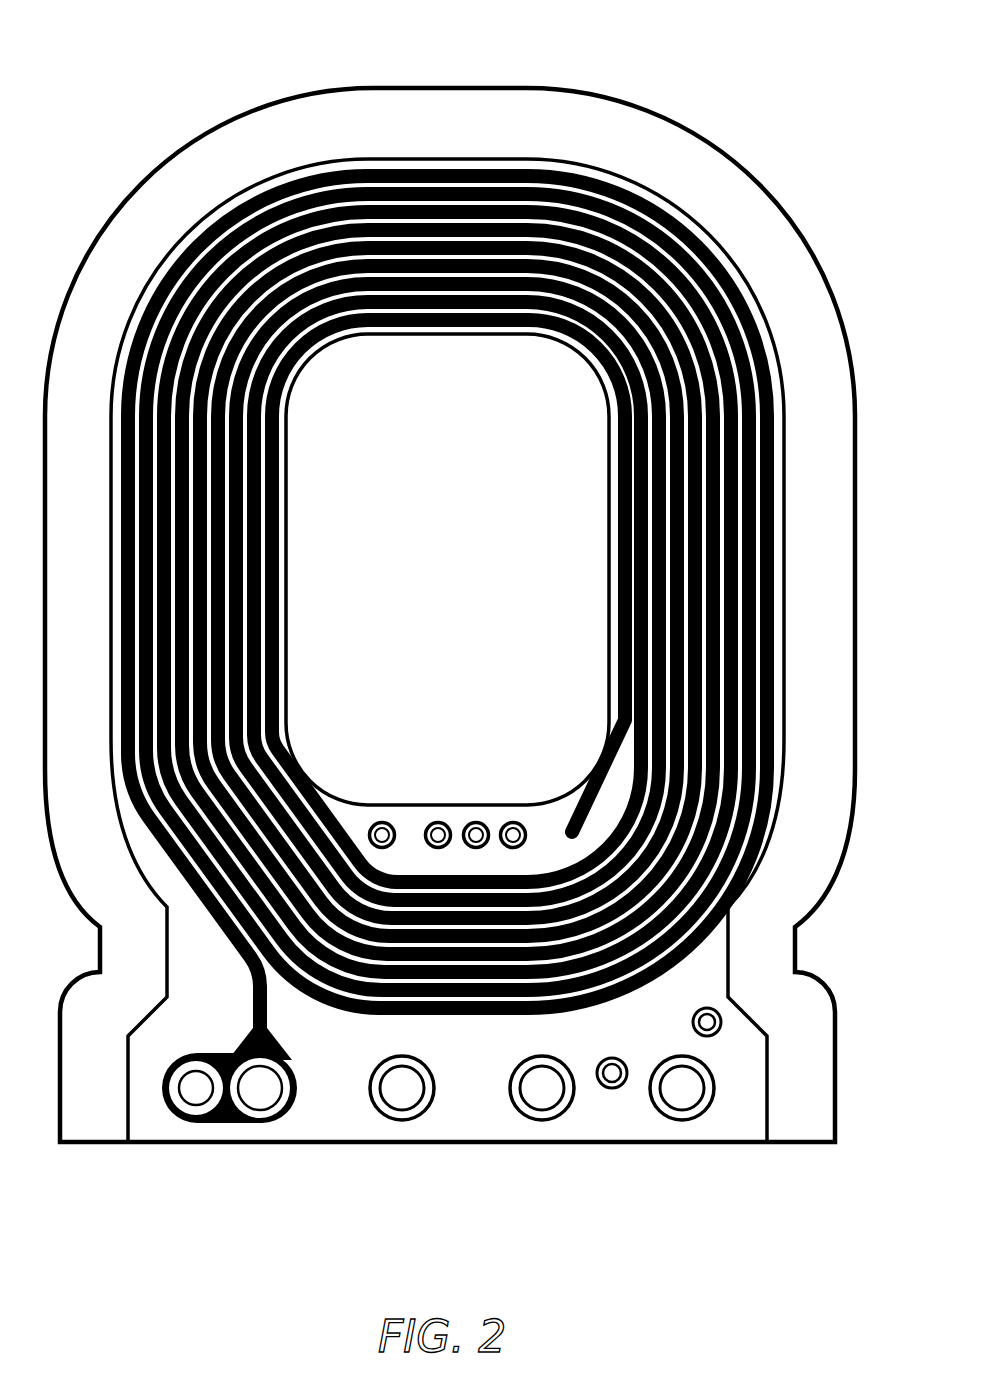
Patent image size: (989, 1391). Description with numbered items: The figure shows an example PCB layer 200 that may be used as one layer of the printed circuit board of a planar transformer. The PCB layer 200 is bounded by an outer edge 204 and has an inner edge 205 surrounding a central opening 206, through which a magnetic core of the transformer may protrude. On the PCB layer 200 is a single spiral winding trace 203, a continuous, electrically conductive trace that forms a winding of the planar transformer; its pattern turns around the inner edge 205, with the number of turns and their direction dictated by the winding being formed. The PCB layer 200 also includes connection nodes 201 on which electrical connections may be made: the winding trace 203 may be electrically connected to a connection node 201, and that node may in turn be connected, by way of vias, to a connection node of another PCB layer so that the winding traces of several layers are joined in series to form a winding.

The PCB layer 200 is at (153, 49).
The connection nodes 201 is at (512, 822).
The winding trace 203 is at (622, 489).
The outer edge 204 is at (146, 182).
The inner edge 205 is at (465, 336).
The opening 206 is at (469, 553).